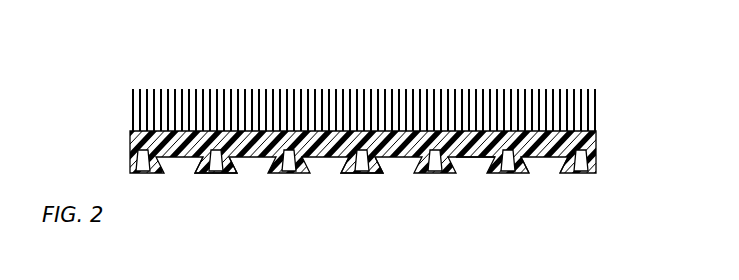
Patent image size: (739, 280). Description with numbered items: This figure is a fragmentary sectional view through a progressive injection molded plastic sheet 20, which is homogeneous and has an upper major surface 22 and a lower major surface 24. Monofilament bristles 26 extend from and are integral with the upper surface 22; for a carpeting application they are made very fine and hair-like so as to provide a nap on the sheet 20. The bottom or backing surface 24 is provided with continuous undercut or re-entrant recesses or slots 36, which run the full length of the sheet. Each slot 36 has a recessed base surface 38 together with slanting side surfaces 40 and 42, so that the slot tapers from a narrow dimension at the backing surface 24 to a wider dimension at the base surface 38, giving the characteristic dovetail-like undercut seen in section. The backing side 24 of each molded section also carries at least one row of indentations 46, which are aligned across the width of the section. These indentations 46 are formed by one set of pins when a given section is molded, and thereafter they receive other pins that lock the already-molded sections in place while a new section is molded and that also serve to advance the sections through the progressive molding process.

The progressive injection molded plastic sheet 20 is at (271, 88).
The upper major surface 22 is at (348, 158).
The lower major surface 24 is at (204, 166).
The monofilament bristles 26 is at (375, 97).
The undercut recesses or slots 36 is at (338, 167).
The recessed base surfaces 38 is at (467, 157).
The slanting side surface 40 is at (524, 170).
The slanting side surface 42 is at (557, 169).
The indentations 46 is at (219, 168).